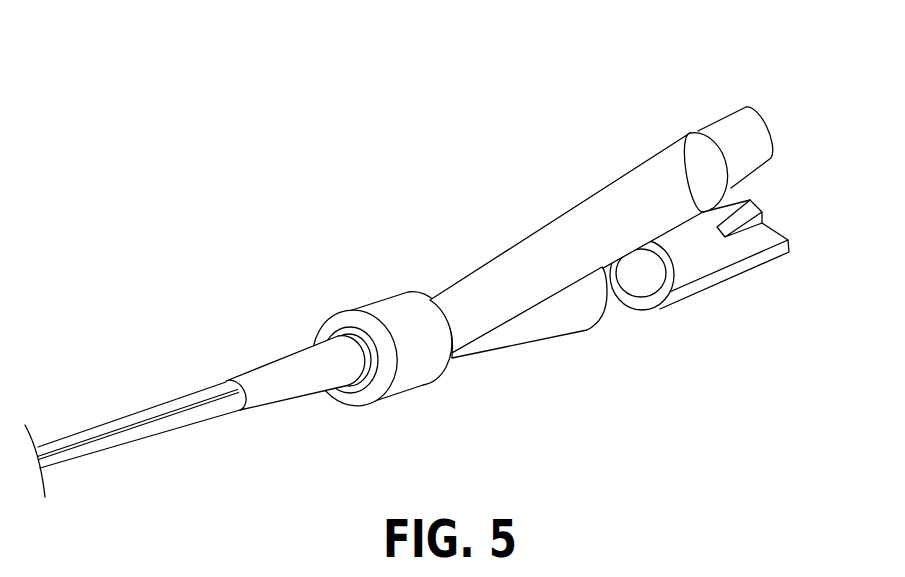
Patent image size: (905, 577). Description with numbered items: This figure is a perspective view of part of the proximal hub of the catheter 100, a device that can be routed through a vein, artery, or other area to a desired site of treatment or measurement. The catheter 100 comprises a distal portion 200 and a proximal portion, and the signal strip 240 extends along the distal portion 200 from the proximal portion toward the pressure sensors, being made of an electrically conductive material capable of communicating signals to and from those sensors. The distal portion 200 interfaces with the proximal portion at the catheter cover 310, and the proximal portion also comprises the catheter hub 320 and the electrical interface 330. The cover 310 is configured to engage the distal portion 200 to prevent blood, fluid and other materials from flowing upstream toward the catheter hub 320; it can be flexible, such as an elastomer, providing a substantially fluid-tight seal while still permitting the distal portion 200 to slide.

The catheter 100 is at (818, 160).
The distal portion 200 is at (54, 420).
The signal strip 240 is at (153, 410).
The catheter cover 310 is at (333, 298).
The catheter hub 320 is at (470, 238).
The electrical interface 330 is at (773, 103).